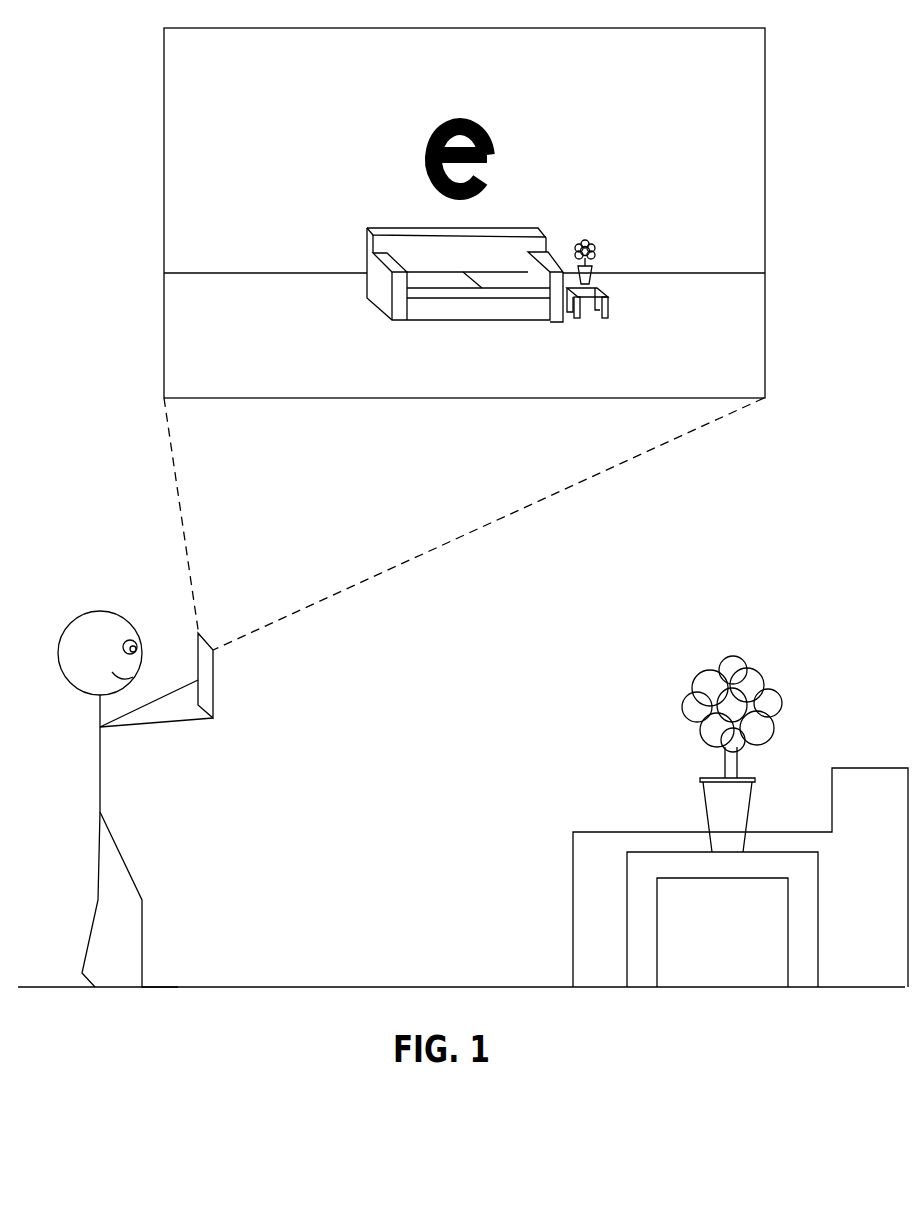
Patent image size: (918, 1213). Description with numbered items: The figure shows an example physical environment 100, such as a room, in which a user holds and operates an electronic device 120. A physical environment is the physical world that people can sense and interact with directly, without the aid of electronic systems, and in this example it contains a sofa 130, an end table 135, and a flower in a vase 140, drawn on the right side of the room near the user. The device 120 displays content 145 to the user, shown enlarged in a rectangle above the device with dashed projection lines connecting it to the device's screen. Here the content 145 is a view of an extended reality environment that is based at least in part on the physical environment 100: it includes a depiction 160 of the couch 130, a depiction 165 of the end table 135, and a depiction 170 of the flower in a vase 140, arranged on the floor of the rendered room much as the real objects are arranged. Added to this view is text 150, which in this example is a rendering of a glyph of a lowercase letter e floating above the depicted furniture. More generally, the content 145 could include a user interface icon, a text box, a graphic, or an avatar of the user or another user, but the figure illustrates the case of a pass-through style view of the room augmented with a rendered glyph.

The physical environment 100 is at (62, 584).
The device 120 is at (218, 680).
The sofa 130 is at (573, 855).
The end table 135 is at (800, 980).
The flower in a vase 140 is at (779, 712).
The content 145 is at (239, 64).
The added text 150 is at (426, 162).
The depiction of the couch 160 is at (367, 242).
The depiction of the end table 165 is at (604, 318).
The depiction of the flower in a vase 170 is at (595, 256).